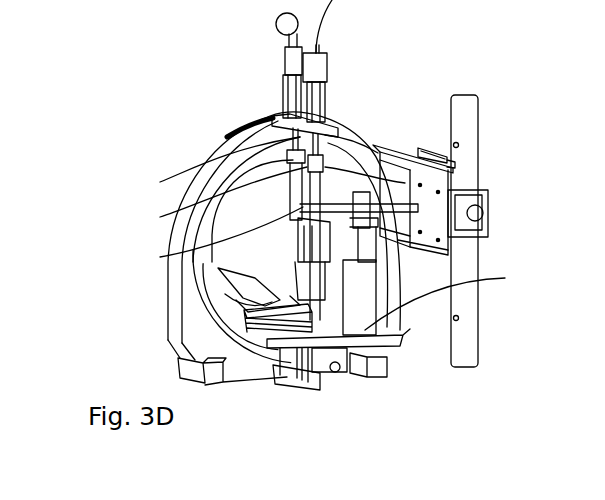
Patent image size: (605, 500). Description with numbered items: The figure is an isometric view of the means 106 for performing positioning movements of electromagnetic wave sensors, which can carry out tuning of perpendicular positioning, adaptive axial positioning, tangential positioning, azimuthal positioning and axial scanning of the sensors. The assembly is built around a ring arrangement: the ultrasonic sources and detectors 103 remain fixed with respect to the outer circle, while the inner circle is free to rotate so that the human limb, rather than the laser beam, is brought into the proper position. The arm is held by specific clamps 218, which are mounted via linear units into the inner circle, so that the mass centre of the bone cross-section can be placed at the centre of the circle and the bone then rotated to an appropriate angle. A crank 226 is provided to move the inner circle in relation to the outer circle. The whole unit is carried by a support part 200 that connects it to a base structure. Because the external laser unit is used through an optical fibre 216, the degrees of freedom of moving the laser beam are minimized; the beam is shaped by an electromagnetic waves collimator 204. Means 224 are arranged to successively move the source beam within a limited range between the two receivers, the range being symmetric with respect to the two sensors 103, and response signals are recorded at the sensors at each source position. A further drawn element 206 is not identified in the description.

The ultrasonic source(s) and detector(s) 103 is at (300, 158).
The electromagnetic waves collimator 204 is at (275, 245).
The crank 226 is at (278, 32).
The cable 206 is at (352, 0).
The optical fibre 216 is at (500, 278).
The clamps 218 is at (300, 380).
The means to move the ultrasonic sensors 224 is at (423, 136).
The support part 200 is at (480, 122).
The means for performing positioning movements of electromagnetic wave sensors 106 is at (593, 202).